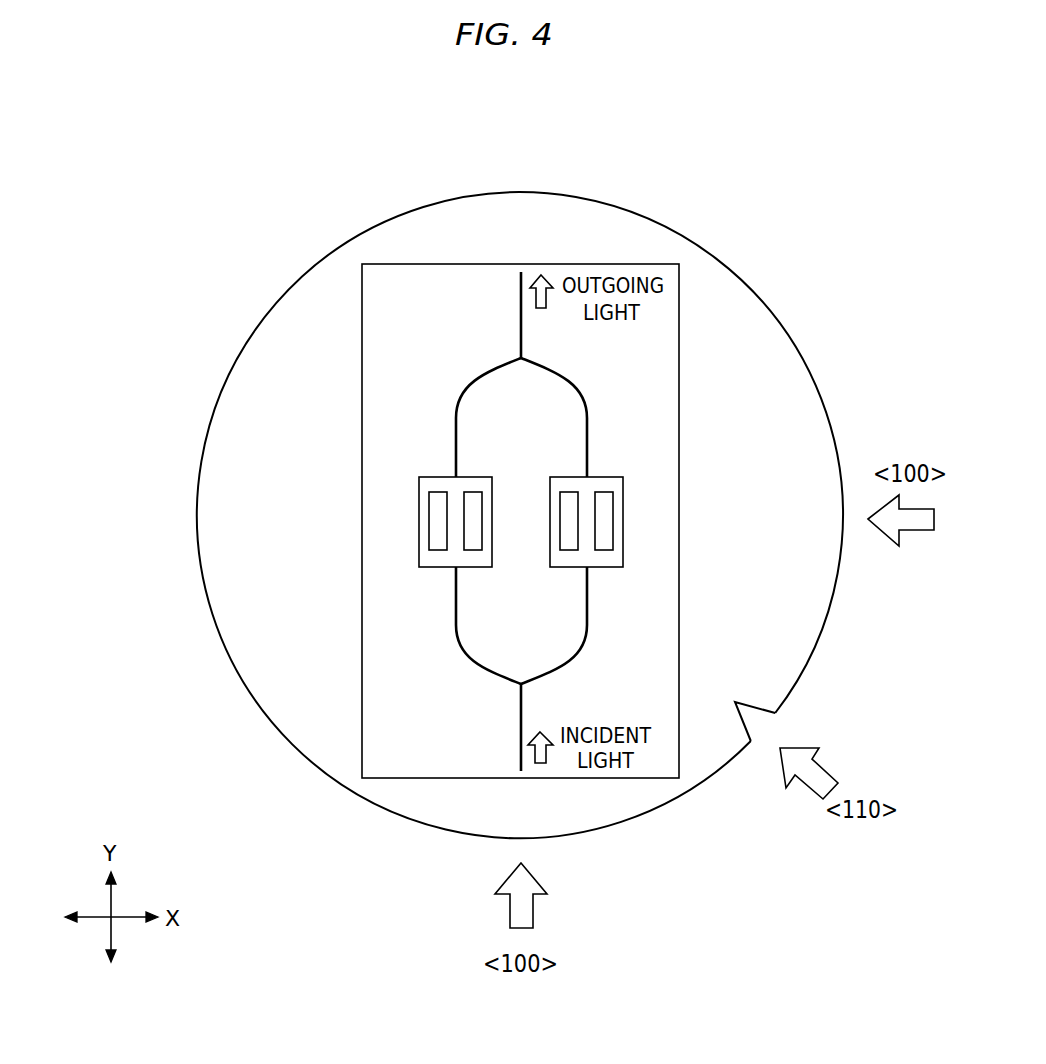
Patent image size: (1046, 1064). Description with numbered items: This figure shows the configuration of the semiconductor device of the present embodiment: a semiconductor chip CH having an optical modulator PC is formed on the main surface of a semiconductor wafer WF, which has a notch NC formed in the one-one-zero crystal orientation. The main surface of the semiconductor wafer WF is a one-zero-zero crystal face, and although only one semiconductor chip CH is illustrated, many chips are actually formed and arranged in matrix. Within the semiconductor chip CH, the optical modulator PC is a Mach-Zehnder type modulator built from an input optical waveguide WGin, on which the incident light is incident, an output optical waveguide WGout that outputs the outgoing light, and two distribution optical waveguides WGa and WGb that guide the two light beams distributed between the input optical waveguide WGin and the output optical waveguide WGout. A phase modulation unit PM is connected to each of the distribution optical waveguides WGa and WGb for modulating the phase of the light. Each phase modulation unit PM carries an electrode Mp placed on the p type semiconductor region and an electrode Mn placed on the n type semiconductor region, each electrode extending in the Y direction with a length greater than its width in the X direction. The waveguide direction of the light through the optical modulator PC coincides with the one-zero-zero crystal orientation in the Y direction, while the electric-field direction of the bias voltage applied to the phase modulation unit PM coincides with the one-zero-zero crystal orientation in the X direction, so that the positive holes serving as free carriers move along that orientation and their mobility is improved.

The semiconductor wafer WF is at (780, 365).
The notch NC is at (752, 722).
The semiconductor chip CH is at (680, 292).
The optical modulator PC is at (519, 521).
The output optical waveguide WGout is at (519, 317).
The input optical waveguide WGin is at (520, 722).
The distribution optical waveguide WGa is at (588, 418).
The distribution optical waveguide WGb is at (455, 418).
The phase modulation unit PM is at (519, 501).
The electrode Mp is at (437, 497).
The electrode Mn is at (521, 493).